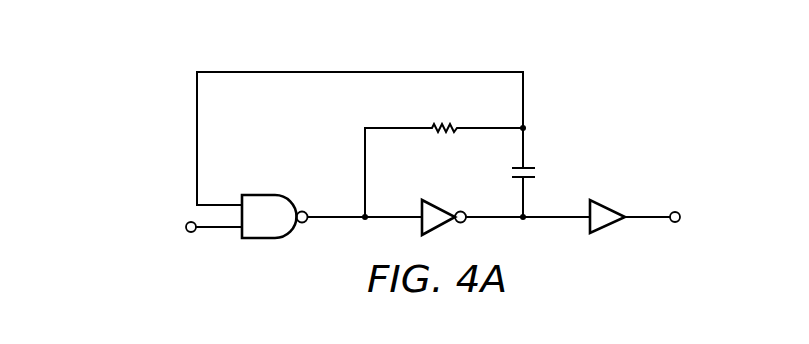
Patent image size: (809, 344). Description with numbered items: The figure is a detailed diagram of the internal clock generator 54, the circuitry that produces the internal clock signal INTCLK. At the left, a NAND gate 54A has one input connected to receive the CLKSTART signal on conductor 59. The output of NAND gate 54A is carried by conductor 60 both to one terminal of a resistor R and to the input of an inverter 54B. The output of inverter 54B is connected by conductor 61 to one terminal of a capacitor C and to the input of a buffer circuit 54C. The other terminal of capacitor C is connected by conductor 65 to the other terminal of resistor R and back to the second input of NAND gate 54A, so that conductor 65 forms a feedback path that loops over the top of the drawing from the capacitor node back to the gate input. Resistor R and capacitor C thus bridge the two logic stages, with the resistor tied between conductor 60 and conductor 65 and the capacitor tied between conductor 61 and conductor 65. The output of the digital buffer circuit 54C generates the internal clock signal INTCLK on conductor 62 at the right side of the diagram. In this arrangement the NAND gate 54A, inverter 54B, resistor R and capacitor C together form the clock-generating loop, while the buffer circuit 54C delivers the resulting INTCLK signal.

The internal clock generator 54 is at (626, 64).
The NAND gate 54A is at (267, 192).
The inverter 54B is at (463, 187).
The buffer circuit 54C is at (608, 202).
The conductor 59 is at (212, 229).
The conductor 60 is at (342, 218).
The conductor 61 is at (545, 220).
The conductor 62 is at (653, 220).
The conductor 65 is at (347, 72).
The resistor R is at (445, 157).
The capacitor C is at (536, 174).